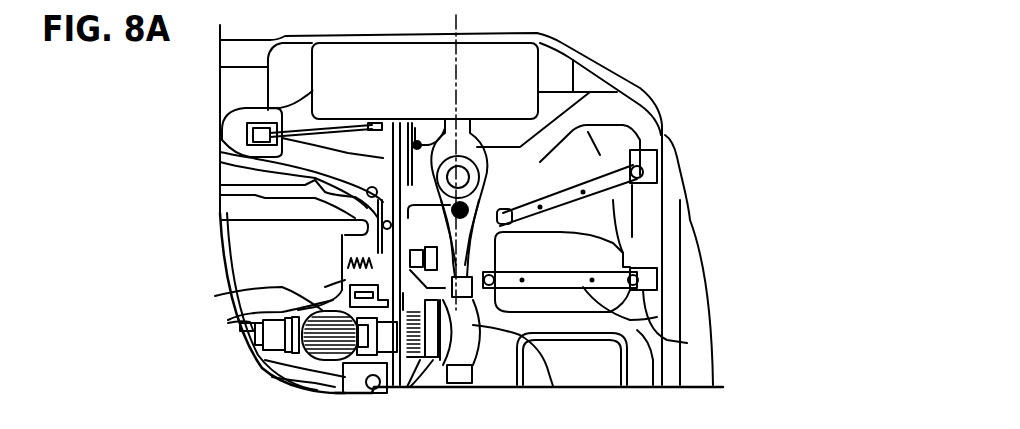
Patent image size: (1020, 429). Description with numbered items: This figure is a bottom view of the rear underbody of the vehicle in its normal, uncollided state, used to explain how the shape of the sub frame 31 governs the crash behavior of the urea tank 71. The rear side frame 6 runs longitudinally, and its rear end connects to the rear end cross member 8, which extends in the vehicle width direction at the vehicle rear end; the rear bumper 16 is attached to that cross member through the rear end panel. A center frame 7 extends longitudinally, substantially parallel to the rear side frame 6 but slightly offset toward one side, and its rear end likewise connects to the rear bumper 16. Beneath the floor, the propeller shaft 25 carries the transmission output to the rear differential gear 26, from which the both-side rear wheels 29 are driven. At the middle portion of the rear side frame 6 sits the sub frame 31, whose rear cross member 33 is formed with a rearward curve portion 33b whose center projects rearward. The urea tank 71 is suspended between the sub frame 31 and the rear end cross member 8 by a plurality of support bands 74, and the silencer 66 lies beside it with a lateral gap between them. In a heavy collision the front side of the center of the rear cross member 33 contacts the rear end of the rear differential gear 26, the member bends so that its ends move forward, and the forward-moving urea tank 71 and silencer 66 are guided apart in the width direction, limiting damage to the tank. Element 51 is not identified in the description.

The rear side frame 6 is at (655, 163).
The center frame 7 is at (657, 277).
The rear end cross member 8 is at (683, 360).
The rear bumper 16 is at (710, 248).
The propeller shaft 25 is at (228, 320).
The rear differential gear 26 is at (338, 308).
The rear wheel 29 is at (312, 88).
The sub frame 31 is at (632, 234).
The rear cross member 33 is at (472, 370).
The rearward curve portion 33b is at (550, 372).
The vehicle body 51 is at (238, 253).
The silencer 66 is at (670, 340).
The urea tank 71 is at (603, 123).
The support band 74 is at (632, 193).